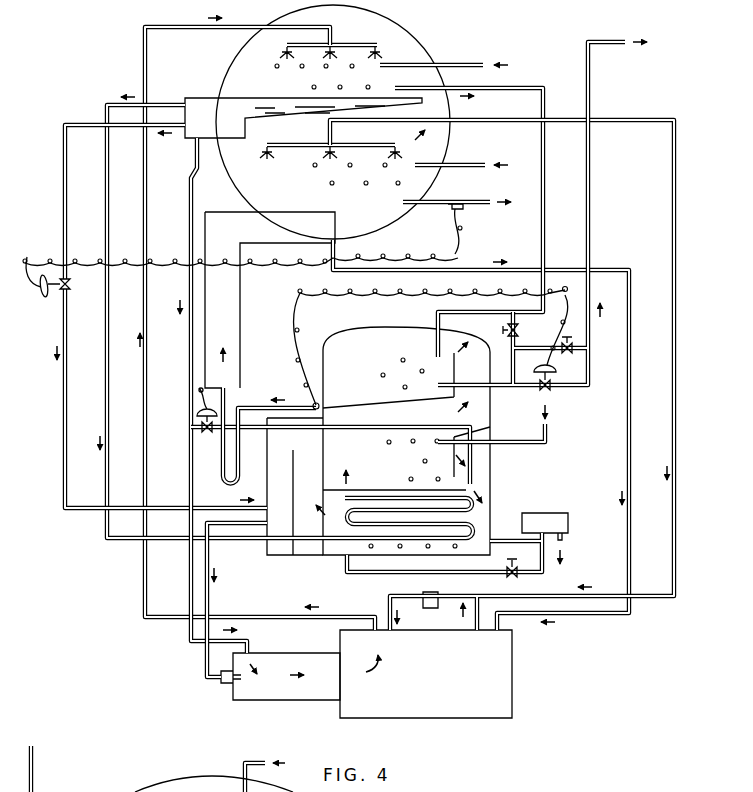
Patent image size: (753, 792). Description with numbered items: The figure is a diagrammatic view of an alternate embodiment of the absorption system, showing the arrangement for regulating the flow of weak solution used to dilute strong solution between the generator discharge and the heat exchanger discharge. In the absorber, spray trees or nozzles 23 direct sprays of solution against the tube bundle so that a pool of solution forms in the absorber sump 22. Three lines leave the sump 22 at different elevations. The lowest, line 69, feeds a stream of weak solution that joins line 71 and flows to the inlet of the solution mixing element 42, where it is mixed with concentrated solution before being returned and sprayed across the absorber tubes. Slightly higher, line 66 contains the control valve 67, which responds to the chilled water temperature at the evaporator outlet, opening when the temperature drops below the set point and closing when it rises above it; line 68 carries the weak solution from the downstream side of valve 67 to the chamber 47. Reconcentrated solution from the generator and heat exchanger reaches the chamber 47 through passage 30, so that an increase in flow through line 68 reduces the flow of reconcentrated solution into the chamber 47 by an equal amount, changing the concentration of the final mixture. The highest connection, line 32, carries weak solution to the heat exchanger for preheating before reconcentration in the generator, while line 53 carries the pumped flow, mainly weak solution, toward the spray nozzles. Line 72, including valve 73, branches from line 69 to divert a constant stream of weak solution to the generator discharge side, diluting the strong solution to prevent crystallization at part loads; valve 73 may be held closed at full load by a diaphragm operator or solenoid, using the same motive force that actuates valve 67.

The absorber sump 22 is at (225, 133).
The spray trees or nozzles 23 is at (350, 44).
The passage 30 is at (330, 523).
The line 32 is at (164, 103).
The solution mixing element 42 is at (226, 683).
The chamber 47 is at (293, 500).
The line 53 is at (146, 395).
The line 66 is at (64, 157).
The control valve 67 is at (41, 296).
The line 68 is at (63, 400).
The line 69 is at (190, 222).
The line 71 is at (191, 486).
The line 72 is at (235, 425).
The valve 73 is at (212, 434).